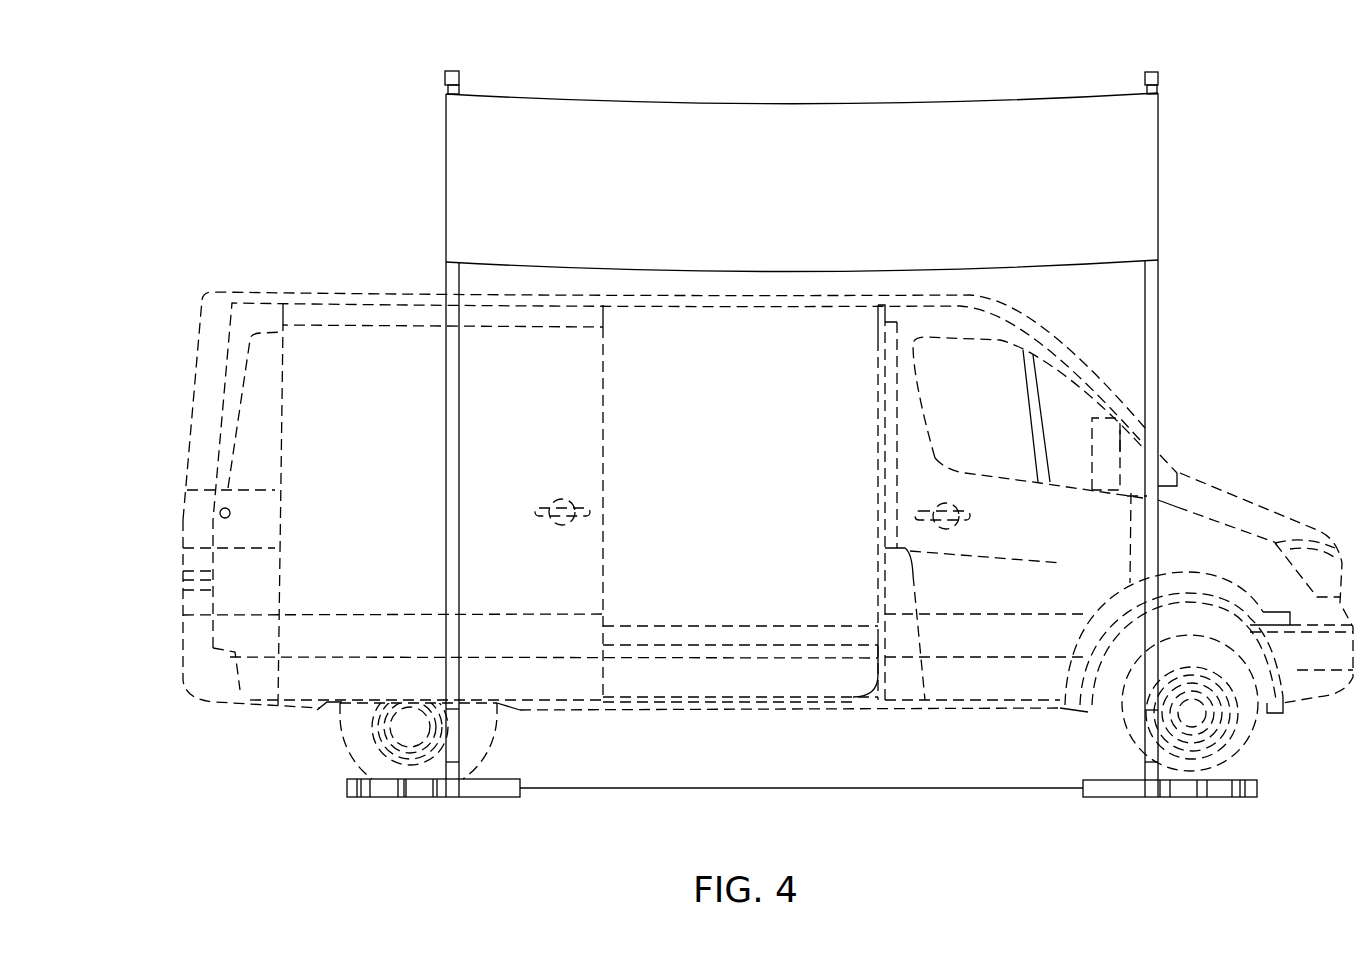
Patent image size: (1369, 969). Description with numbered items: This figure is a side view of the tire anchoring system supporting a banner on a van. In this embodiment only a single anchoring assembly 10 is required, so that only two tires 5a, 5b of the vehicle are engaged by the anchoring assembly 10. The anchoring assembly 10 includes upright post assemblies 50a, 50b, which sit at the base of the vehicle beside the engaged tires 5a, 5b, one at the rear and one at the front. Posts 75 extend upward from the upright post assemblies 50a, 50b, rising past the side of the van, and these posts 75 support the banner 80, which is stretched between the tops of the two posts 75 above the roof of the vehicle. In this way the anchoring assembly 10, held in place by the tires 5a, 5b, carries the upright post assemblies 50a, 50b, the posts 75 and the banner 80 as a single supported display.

The anchoring assembly 10 is at (962, 800).
The banner 80 is at (988, 125).
The posts 75 is at (453, 335).
The upright post assembly 50a is at (452, 742).
The upright post assembly 50b is at (1152, 748).
The tire 5a is at (355, 731).
The tire 5b is at (1247, 735).